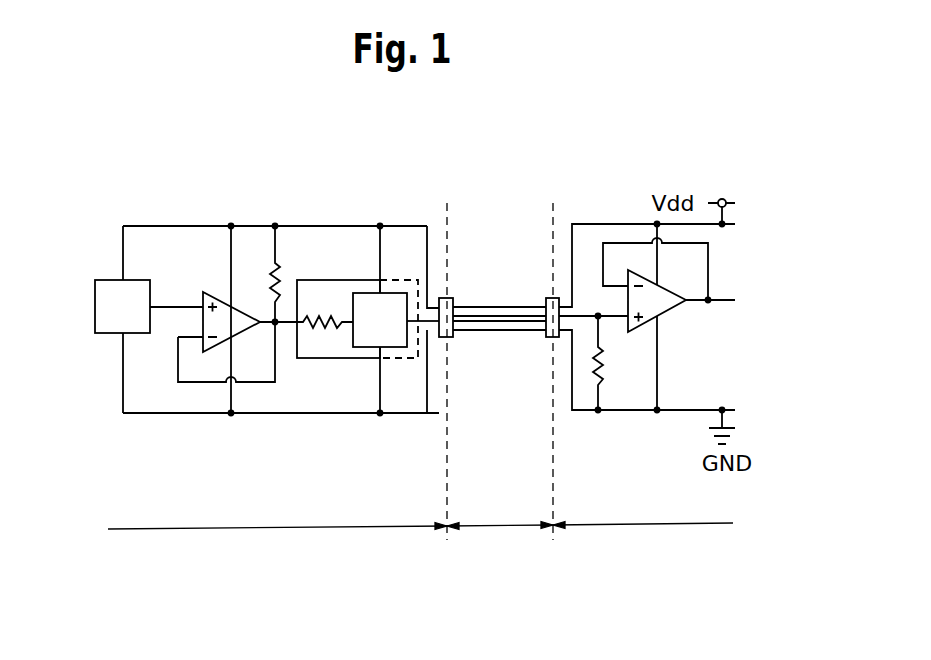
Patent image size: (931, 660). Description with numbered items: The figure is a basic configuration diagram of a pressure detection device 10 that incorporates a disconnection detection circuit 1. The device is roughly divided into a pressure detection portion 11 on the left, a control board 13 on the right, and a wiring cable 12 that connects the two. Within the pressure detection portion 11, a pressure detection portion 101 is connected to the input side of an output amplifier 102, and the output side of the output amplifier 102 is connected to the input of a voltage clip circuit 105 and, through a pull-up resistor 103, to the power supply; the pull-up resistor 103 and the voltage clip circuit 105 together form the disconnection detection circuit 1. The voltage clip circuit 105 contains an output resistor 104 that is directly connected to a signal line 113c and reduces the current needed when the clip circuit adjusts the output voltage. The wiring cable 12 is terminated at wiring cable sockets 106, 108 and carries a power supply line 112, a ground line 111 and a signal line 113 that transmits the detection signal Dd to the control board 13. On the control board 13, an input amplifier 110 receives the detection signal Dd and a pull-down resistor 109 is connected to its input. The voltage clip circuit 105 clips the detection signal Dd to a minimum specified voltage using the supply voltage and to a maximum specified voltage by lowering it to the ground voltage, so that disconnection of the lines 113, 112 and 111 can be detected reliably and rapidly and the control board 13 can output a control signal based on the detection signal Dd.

The disconnection detection circuit 1 is at (405, 398).
The pressure detection device 10 is at (592, 176).
The pressure detection portion 11 is at (277, 516).
The wiring cable 12 is at (500, 515).
The control board 13 is at (643, 513).
The pressure detection portion 101 is at (105, 280).
The output amplifier 102 is at (208, 288).
The pull-up resistor 103 is at (272, 275).
The output resistor 104 is at (320, 326).
The voltage clip circuit 105 is at (334, 280).
The wiring cable socket 106 is at (450, 297).
The wiring cable socket 108 is at (545, 297).
The pull-down resistor 109 is at (603, 377).
The input amplifier 110 is at (668, 312).
The GND line 111 is at (480, 330).
The power supply line 112 is at (510, 305).
The signal line 113 is at (518, 322).
The signal line 113c is at (345, 327).
The detection signal Dd is at (477, 313).